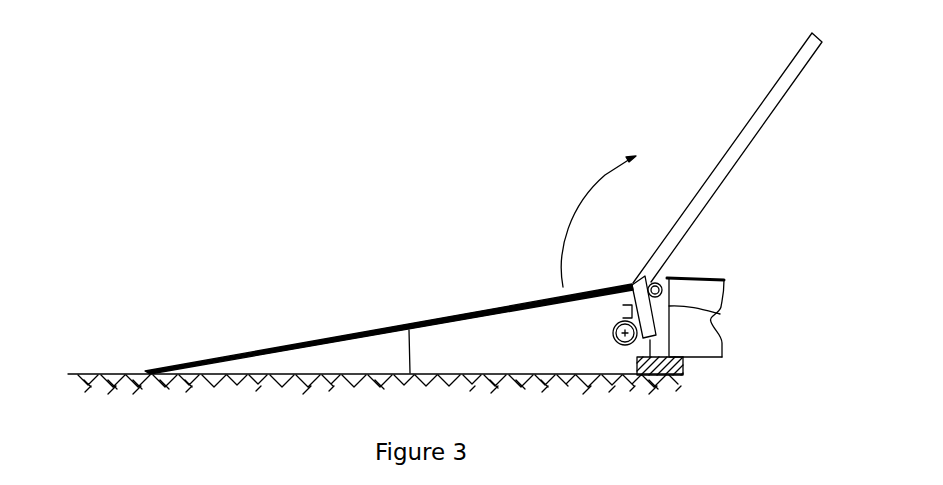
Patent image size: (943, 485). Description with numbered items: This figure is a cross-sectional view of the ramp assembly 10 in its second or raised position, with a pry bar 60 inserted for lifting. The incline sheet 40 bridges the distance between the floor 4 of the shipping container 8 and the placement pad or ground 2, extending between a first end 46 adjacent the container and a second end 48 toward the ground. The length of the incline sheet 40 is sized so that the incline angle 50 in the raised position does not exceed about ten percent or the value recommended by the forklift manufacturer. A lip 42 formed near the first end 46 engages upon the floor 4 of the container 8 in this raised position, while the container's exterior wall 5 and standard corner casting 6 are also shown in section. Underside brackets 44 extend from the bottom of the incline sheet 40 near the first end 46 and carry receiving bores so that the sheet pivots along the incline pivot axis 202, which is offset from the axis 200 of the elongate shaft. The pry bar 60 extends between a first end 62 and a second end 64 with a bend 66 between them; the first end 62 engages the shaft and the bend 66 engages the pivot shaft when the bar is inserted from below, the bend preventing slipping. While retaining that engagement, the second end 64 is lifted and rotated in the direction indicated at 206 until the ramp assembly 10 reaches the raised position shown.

The ramp assembly 10 is at (237, 198).
The placement pad or ground 2 is at (74, 373).
The incline sheet 40 is at (260, 351).
The second end 48 is at (140, 370).
The incline angle 50 is at (413, 351).
The direction of rotation 206 is at (562, 228).
The incline pivot axis 202 is at (640, 278).
The pry bar 60 is at (718, 160).
The second end 64 is at (827, 28).
The bend 66 is at (642, 280).
The underside bracket 44 is at (707, 276).
The lip 42 is at (703, 277).
The first end 46 is at (715, 272).
The floor 4 is at (723, 280).
The exterior wall 5 is at (720, 317).
The shipping container 8 is at (703, 330).
The corner casting 6 is at (683, 360).
The axis 200 is at (625, 347).
The first end 62 is at (652, 376).